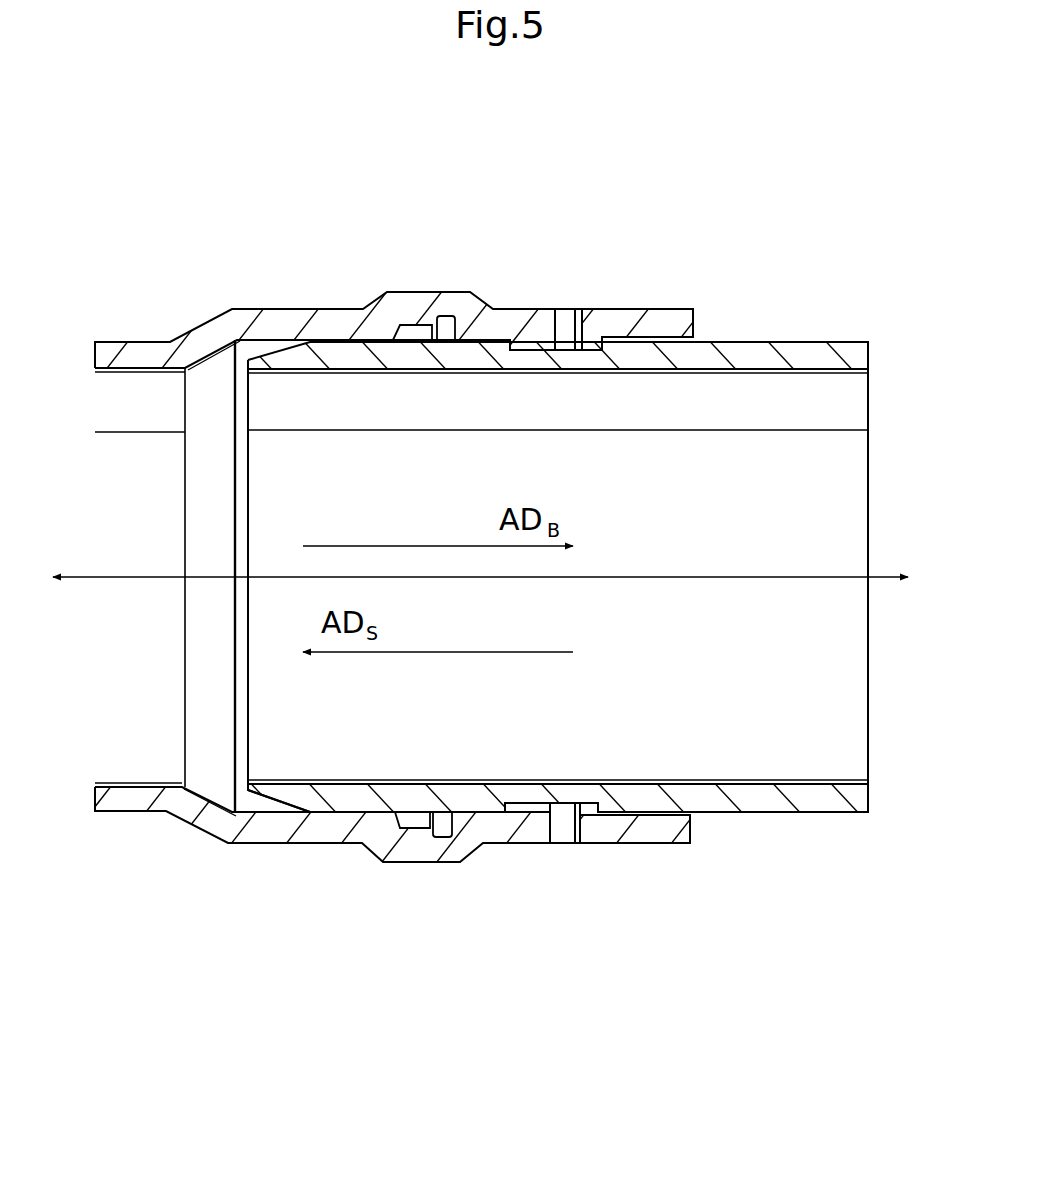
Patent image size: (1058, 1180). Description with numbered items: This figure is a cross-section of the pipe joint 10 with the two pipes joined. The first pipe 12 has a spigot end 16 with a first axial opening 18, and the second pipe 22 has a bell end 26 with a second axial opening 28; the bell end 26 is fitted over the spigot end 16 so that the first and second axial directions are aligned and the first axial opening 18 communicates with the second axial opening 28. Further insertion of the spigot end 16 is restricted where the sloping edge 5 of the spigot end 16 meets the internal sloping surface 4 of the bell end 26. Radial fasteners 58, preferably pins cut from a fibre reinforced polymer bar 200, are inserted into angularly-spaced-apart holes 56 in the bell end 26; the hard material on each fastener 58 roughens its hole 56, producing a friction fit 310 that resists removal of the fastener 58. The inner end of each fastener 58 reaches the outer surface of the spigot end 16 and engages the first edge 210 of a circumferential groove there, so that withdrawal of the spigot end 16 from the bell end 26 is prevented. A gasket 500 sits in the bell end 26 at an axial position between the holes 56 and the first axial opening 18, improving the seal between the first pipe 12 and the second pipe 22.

The pipe joint 10 is at (627, 158).
The first pipe 12 is at (795, 328).
The spigot end 16 is at (726, 328).
The first axial opening 18 is at (213, 705).
The second pipe 22 is at (637, 298).
The bell end 26 is at (235, 297).
The second axial opening 28 is at (702, 818).
The internal sloping surface 4 is at (198, 807).
The sloping edge 5 is at (253, 803).
The angularly-spaced-apart hole 56 is at (586, 851).
The radial fastener 58 is at (573, 303).
The fibre reinforced polymer bar 200 is at (583, 793).
The first edge 210 is at (512, 798).
The friction fit 310 is at (557, 303).
The gasket 500 is at (420, 338).